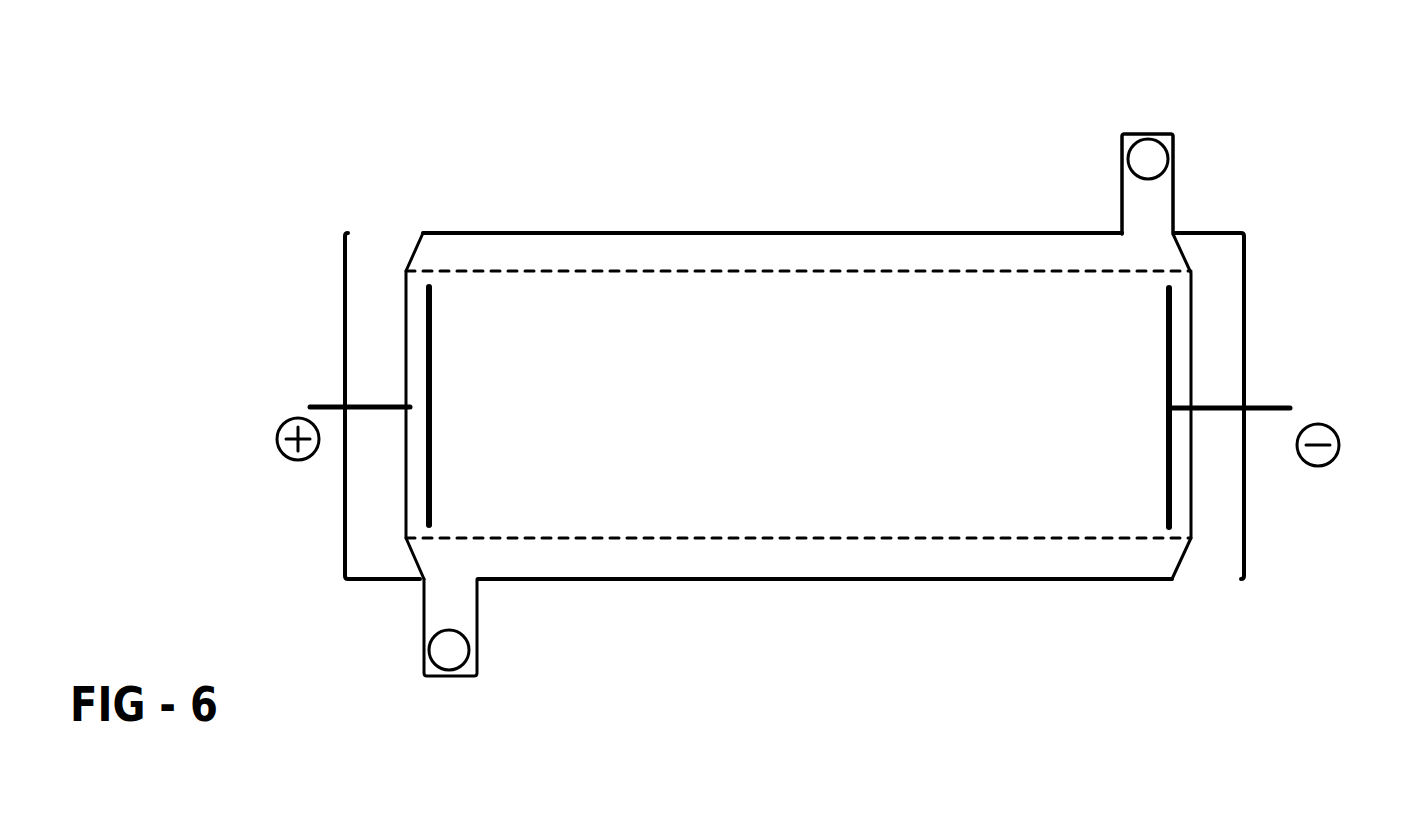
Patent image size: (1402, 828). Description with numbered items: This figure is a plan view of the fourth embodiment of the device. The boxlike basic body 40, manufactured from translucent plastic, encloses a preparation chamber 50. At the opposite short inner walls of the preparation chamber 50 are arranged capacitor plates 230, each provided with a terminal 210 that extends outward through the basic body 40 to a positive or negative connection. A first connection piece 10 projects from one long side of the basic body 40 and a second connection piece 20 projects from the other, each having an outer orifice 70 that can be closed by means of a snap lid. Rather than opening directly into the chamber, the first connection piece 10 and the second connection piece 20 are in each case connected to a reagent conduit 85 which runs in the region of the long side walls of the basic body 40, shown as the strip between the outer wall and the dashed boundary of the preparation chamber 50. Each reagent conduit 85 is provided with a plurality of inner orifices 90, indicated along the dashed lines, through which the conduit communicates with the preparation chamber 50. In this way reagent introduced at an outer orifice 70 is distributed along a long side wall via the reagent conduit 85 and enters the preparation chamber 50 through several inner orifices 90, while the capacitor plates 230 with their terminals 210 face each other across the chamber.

The first connection piece 10 is at (455, 608).
The second connection piece 20 is at (1153, 207).
The basic body 40 is at (1232, 478).
The preparation chamber 50 is at (950, 363).
The outer orifice 70 is at (1148, 156).
The reagent conduit 85 is at (793, 243).
The inner orifice 90 is at (650, 271).
The terminal 210 is at (375, 407).
The capacitor plate 230 is at (428, 351).